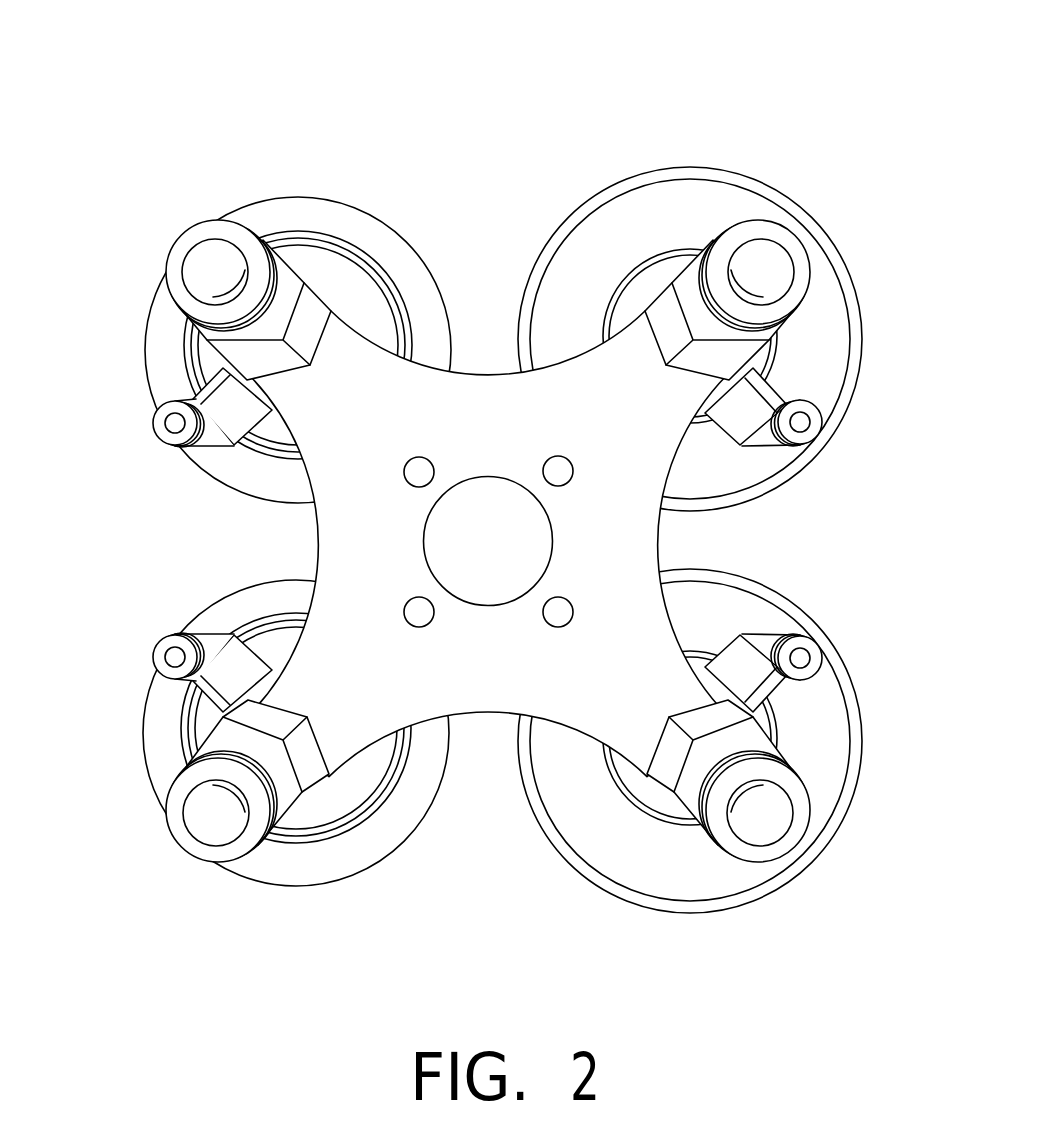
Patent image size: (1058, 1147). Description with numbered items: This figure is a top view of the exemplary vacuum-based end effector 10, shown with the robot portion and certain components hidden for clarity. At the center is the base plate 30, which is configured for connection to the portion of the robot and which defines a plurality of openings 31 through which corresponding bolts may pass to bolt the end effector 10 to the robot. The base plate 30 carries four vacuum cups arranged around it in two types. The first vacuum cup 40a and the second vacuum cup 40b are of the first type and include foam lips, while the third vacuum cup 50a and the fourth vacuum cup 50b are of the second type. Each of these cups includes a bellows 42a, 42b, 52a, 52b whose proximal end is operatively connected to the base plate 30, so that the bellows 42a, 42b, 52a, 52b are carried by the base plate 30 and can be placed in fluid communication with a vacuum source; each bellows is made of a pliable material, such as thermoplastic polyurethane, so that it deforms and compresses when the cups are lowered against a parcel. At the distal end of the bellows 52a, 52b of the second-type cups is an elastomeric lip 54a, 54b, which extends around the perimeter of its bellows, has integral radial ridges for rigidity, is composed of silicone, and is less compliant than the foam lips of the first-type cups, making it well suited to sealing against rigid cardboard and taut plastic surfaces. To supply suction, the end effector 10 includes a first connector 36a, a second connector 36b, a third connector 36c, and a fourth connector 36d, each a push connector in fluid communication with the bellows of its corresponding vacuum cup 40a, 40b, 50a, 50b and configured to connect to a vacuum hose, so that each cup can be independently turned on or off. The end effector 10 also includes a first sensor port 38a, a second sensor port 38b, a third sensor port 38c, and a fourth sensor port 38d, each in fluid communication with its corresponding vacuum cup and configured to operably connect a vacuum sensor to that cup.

The end effector 10 is at (499, 505).
The base plate 30 is at (484, 714).
The openings 31 is at (560, 467).
The first connector 36a is at (794, 842).
The second connector 36b is at (797, 250).
The third connector 36c is at (210, 848).
The fourth connector 36d is at (218, 227).
The first sensor port 38a is at (815, 657).
The second sensor port 38b is at (818, 436).
The third sensor port 38c is at (170, 653).
The fourth sensor port 38d is at (163, 434).
The first vacuum cup 40a is at (707, 913).
The second vacuum cup 40b is at (585, 193).
The bellows 42a is at (767, 870).
The bellows 42b is at (713, 200).
The third vacuum cup 50a is at (304, 888).
The fourth vacuum cup 50b is at (147, 334).
The bellows 52a is at (343, 797).
The bellows 52b is at (310, 266).
The elastomeric lip 54a is at (393, 830).
The elastomeric lip 54b is at (363, 241).